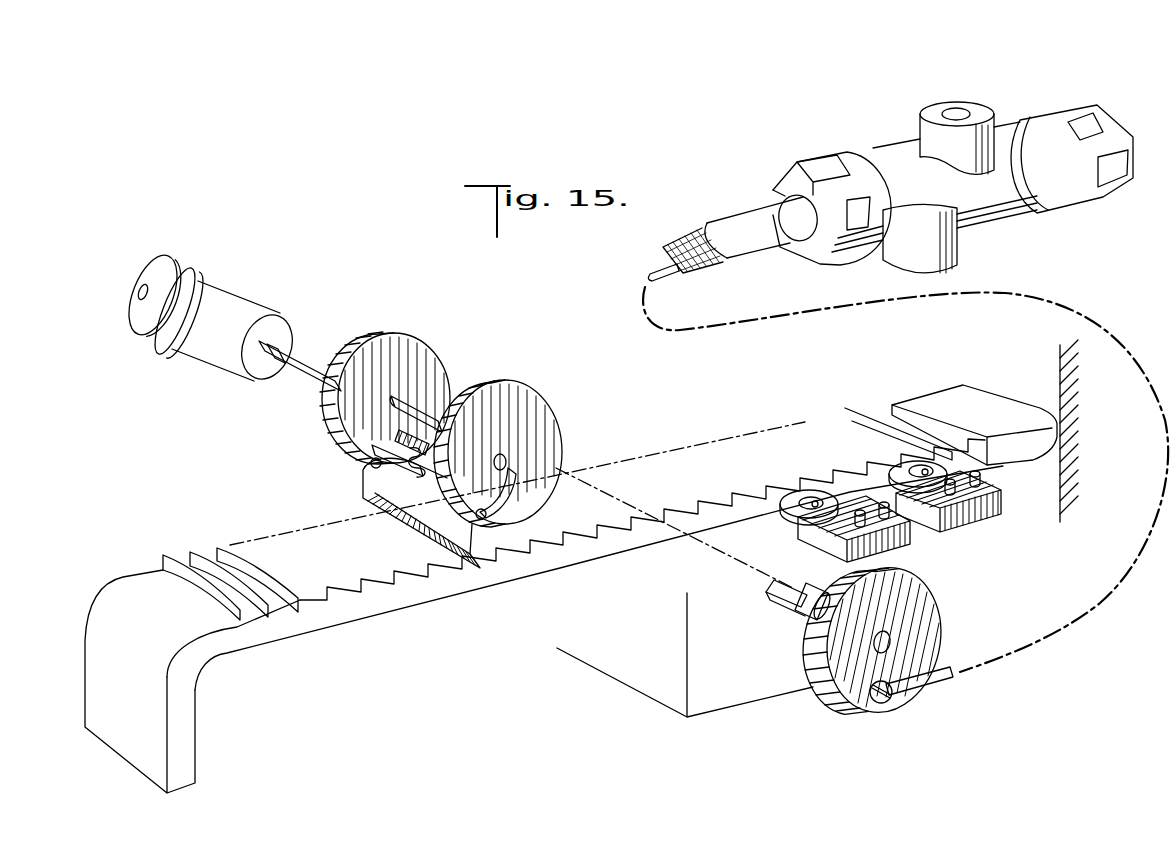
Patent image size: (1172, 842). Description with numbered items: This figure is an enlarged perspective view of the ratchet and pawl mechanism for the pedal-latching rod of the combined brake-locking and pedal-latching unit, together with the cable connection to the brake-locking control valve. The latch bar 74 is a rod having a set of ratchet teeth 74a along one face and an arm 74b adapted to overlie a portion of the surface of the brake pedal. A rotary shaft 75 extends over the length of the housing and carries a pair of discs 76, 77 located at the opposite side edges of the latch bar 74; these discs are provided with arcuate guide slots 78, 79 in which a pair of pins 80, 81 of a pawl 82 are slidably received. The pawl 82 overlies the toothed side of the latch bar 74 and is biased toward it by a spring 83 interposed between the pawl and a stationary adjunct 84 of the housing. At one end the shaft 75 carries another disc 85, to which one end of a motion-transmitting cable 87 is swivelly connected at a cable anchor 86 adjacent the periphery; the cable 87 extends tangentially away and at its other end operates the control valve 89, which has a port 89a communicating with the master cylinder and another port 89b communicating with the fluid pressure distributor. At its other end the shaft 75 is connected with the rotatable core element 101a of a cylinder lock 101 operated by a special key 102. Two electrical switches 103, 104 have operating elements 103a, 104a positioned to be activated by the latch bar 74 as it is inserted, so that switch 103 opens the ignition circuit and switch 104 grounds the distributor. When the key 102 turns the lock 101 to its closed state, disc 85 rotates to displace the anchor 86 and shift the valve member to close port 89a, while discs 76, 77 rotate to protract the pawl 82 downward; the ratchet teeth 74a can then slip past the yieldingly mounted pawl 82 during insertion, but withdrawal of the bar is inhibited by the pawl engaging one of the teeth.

The latch bar 74 is at (332, 622).
The ratchet teeth 74a is at (227, 543).
The arm 74b is at (188, 738).
The rotary shaft 75 is at (395, 402).
The disc 76 is at (393, 338).
The disc 77 is at (553, 430).
The arcuate guide slot 78 is at (392, 433).
The arcuate guide slot 79 is at (520, 498).
The pin 80 is at (362, 472).
The pin 81 is at (488, 515).
The pawl 82 is at (432, 536).
The spring 83 is at (363, 490).
The stationary adjunct 84 is at (428, 430).
The disc 85 is at (927, 615).
The cable anchor 86 is at (873, 705).
The motion-transmitting cable 87 is at (960, 676).
The control valve 89 is at (887, 160).
The port 89a is at (957, 253).
The port 89b is at (923, 127).
The cylinder lock 101 is at (245, 310).
The rotatable core element 101a is at (265, 352).
The key 102 is at (142, 328).
The electrical switch 103 is at (975, 524).
The operating element 103a is at (995, 468).
The electrical switch 104 is at (800, 543).
The operating element 104a is at (790, 493).